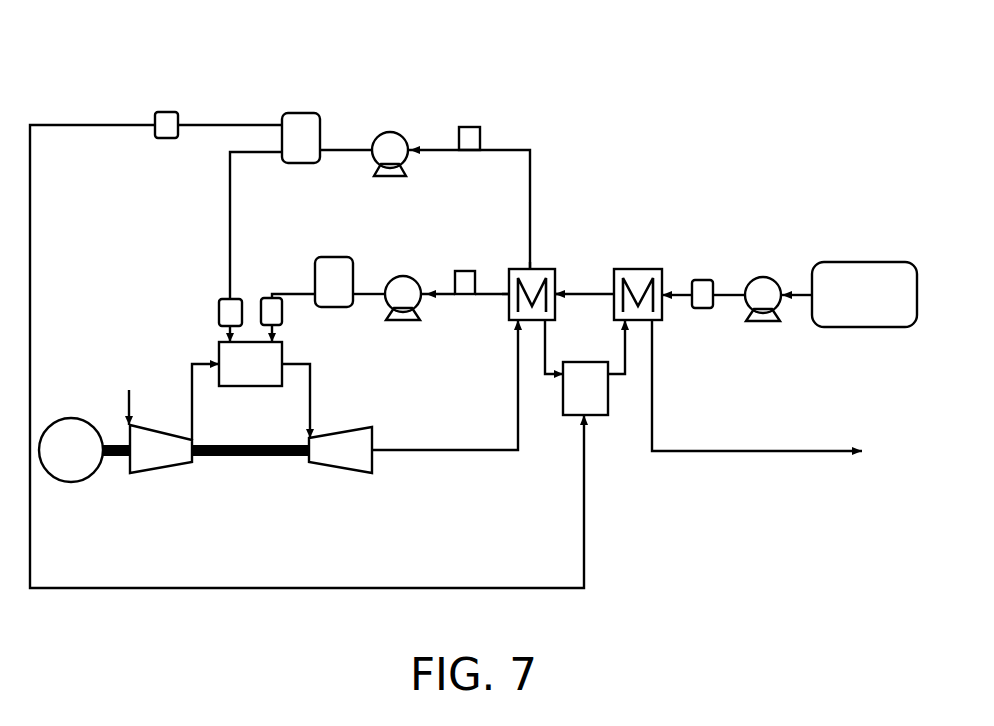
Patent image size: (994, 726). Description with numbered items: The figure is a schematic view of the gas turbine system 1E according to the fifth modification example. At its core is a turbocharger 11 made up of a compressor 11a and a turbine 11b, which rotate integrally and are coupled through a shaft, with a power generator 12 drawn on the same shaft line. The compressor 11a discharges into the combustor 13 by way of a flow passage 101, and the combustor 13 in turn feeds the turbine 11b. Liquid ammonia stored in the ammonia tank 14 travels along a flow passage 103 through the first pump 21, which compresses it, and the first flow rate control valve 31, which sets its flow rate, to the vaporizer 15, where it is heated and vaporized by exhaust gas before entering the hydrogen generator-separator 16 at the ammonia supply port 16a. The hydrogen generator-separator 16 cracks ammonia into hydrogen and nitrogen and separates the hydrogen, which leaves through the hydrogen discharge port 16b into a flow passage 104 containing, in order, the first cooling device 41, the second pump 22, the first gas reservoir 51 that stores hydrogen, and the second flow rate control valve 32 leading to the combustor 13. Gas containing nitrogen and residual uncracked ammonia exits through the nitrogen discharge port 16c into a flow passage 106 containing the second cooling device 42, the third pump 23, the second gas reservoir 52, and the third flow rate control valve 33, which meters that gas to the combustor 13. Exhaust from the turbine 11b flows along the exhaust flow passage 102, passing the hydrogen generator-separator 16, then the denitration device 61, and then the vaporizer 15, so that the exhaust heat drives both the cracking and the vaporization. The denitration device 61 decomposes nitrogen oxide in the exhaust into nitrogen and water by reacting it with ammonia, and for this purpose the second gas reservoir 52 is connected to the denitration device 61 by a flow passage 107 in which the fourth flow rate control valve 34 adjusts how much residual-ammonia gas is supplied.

The gas turbine system 1E is at (87, 77).
The turbocharger 11 is at (205, 498).
The compressor 11a is at (164, 474).
The turbine 11b is at (344, 474).
The power generator 12 is at (70, 484).
The combustor 13 is at (252, 387).
The ammonia tank 14 is at (862, 261).
The vaporizer 15 is at (634, 267).
The hydrogen generator-separator 16 is at (542, 267).
The ammonia supply port 16a is at (576, 277).
The hydrogen discharge port 16b is at (504, 276).
The nitrogen discharge port 16c is at (531, 266).
The first pump 21 is at (762, 276).
The second pump 22 is at (403, 275).
The third pump 23 is at (388, 131).
The first flow rate control valve 31 is at (700, 279).
The second flow rate control valve 32 is at (283, 318).
The third flow rate control valve 33 is at (218, 310).
The fourth flow rate control valve 34 is at (163, 111).
The first cooling device 41 is at (464, 270).
The second cooling device 42 is at (470, 126).
The first gas reservoir 51 is at (330, 256).
The second gas reservoir 52 is at (297, 112).
The denitration device 61 is at (598, 418).
The flow passage 101 is at (190, 380).
The exhaust flow passage 102 is at (312, 398).
The flow passage 103 is at (588, 298).
The flow passage 104 is at (280, 292).
The flow passage 106 is at (229, 163).
The flow passage 107 is at (237, 124).